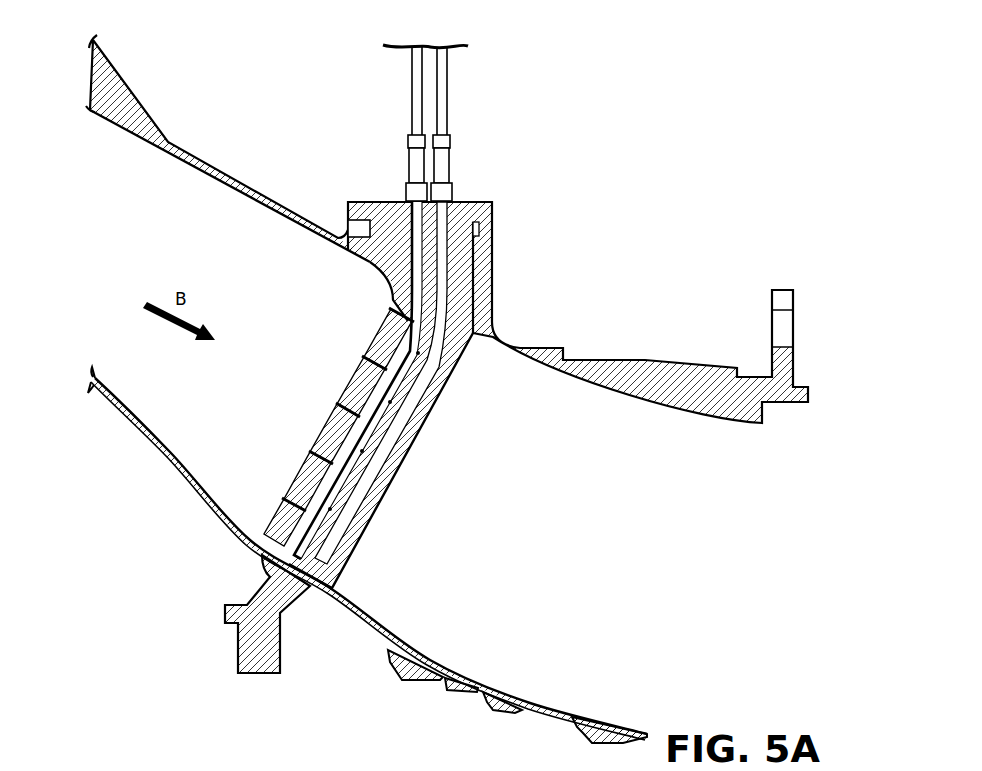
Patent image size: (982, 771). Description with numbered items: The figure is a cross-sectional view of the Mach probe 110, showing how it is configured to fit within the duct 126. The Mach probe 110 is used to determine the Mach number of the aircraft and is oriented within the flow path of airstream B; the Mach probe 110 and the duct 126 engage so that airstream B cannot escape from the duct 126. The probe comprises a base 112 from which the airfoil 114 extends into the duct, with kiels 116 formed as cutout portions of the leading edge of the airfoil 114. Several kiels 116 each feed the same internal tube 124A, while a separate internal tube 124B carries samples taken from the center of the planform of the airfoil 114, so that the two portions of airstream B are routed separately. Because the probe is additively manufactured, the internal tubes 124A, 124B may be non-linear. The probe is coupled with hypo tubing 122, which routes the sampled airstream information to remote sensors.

The Mach probe 110 is at (511, 316).
The base 112 is at (482, 274).
The airfoil 114 is at (404, 477).
The kiels 116 is at (355, 355).
The hypo tubing 122 is at (442, 97).
The internal tube 124A is at (343, 460).
The internal tube 124B is at (397, 393).
The duct 126 is at (185, 135).